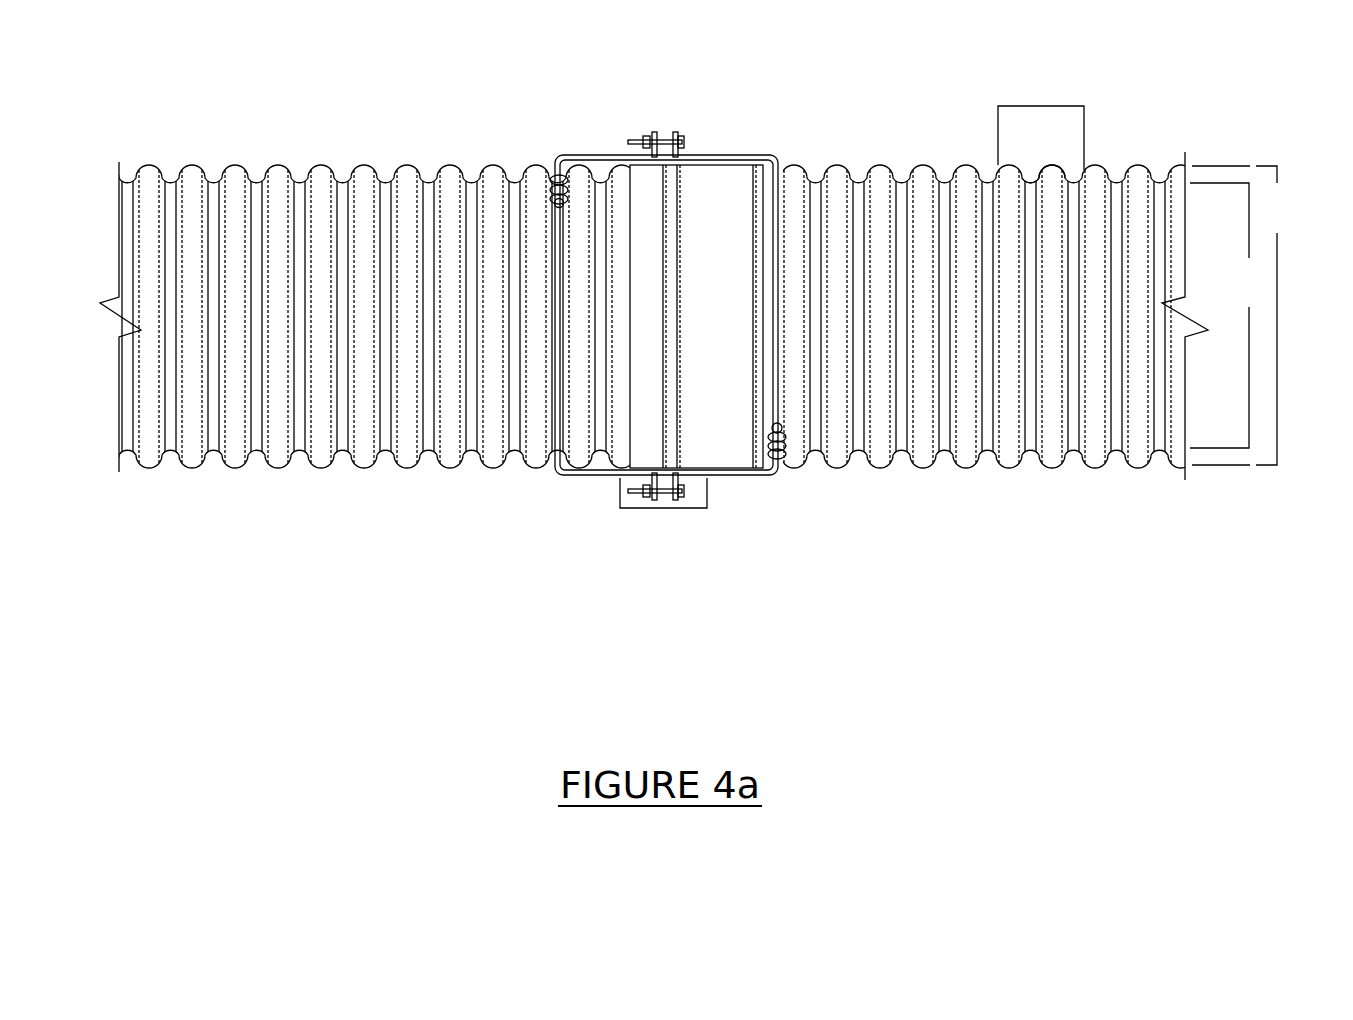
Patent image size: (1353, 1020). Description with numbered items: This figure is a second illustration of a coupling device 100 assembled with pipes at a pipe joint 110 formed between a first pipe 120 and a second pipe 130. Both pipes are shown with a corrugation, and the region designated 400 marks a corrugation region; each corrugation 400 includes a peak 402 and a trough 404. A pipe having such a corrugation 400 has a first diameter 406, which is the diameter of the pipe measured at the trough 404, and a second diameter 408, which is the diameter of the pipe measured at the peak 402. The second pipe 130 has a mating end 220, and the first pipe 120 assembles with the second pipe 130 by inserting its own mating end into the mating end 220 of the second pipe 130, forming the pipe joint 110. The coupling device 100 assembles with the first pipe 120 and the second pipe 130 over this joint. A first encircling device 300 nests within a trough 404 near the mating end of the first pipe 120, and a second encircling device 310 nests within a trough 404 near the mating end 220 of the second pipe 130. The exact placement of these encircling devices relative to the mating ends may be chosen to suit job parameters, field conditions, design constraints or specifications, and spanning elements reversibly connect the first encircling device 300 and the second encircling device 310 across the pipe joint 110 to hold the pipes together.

The coupling device 100 is at (763, 136).
The pipe joint 110 is at (628, 510).
The first pipe 120 is at (349, 150).
The second pipe 130 is at (927, 479).
The mating end 220 is at (744, 369).
The first encircling device 300 is at (560, 382).
The second encircling device 310 is at (780, 372).
The corrugation 400 is at (1057, 106).
The peak 402 is at (1062, 160).
The trough 404 is at (1040, 168).
The first diameter 406 is at (1228, 315).
The second diameter 408 is at (1244, 315).